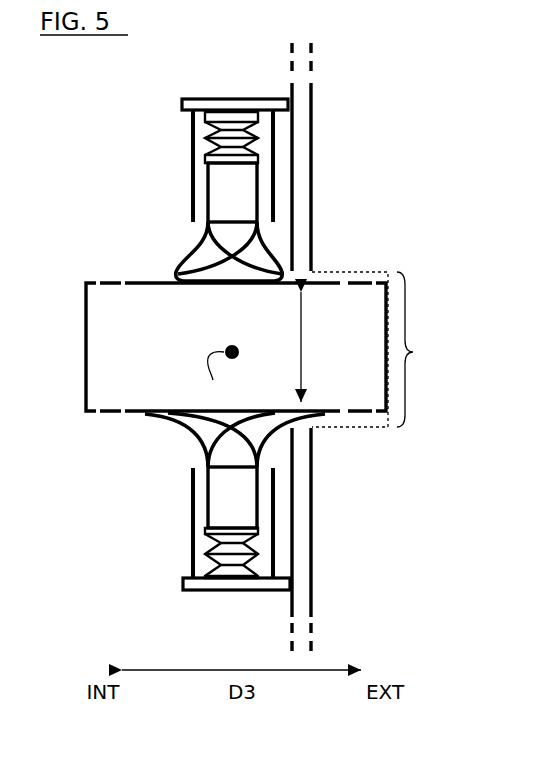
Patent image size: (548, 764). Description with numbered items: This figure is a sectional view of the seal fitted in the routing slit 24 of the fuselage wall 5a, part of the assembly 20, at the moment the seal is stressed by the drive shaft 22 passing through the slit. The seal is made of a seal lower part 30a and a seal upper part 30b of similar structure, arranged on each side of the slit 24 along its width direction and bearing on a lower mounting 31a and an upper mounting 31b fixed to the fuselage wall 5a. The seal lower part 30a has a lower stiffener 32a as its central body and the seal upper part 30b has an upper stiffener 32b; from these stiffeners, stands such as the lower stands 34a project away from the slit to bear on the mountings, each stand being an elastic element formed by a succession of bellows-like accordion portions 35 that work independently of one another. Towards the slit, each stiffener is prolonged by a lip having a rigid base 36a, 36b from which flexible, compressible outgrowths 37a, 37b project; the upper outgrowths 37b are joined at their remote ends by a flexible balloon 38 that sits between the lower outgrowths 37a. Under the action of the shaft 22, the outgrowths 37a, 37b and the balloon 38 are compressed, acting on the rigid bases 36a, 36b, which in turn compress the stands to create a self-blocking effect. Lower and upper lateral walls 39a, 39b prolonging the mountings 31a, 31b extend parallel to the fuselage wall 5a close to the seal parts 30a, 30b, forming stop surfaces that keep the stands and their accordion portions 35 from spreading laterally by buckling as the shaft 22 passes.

The assembly 20 is at (366, 100).
The fuselage wall 5a is at (297, 134).
The drive shaft 22 is at (236, 347).
The routing slit 24 is at (377, 349).
The seal lower part 30a is at (166, 589).
The seal upper part 30b is at (168, 120).
The lower mounting 31a is at (233, 590).
The upper mounting 31b is at (216, 98).
The lower stiffener 32a is at (222, 495).
The upper stiffener 32b is at (238, 207).
The lower stands 34a is at (282, 553).
The accordion portions 35 is at (216, 151).
The rigid base of lower lip 36a is at (258, 470).
The rigid base of upper lip 36b is at (200, 258).
The lower outgrowths 37a is at (222, 437).
The upper outgrowths 37b is at (260, 268).
The balloon 38 is at (237, 371).
The lower lateral wall 39a is at (272, 530).
The upper lateral wall 39b is at (254, 207).